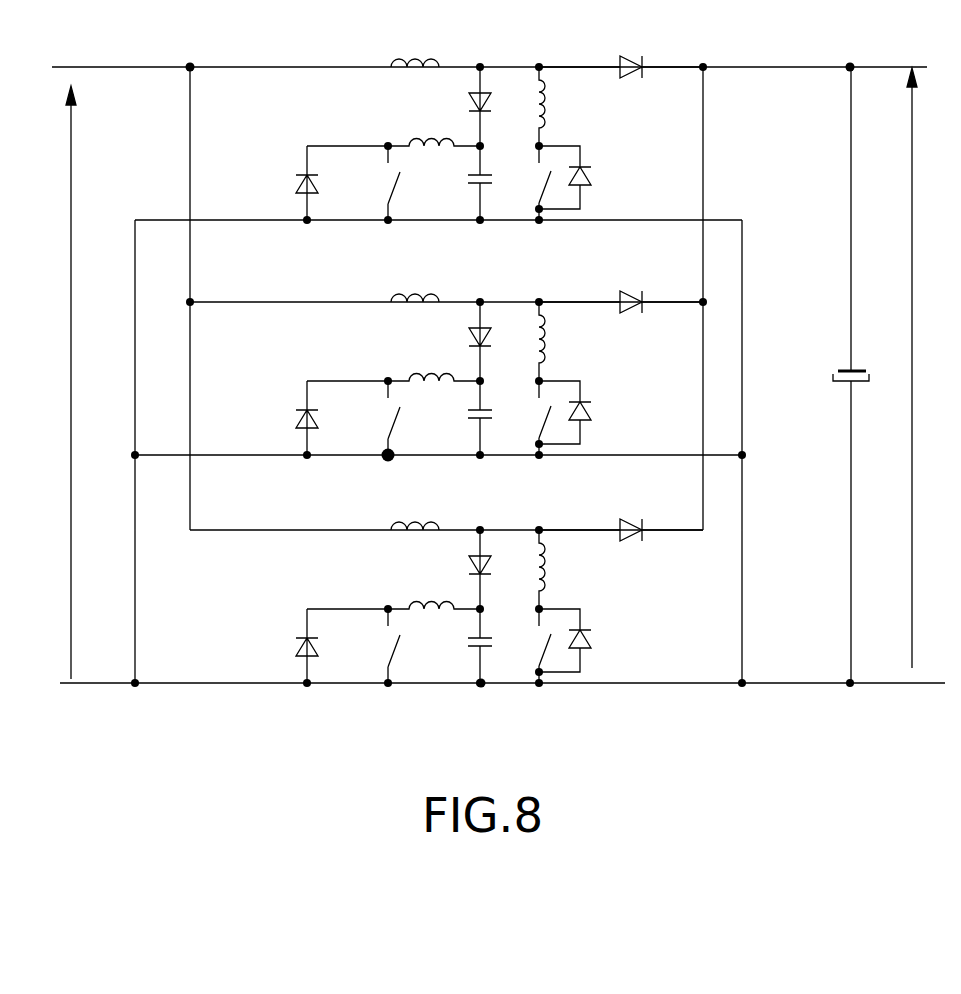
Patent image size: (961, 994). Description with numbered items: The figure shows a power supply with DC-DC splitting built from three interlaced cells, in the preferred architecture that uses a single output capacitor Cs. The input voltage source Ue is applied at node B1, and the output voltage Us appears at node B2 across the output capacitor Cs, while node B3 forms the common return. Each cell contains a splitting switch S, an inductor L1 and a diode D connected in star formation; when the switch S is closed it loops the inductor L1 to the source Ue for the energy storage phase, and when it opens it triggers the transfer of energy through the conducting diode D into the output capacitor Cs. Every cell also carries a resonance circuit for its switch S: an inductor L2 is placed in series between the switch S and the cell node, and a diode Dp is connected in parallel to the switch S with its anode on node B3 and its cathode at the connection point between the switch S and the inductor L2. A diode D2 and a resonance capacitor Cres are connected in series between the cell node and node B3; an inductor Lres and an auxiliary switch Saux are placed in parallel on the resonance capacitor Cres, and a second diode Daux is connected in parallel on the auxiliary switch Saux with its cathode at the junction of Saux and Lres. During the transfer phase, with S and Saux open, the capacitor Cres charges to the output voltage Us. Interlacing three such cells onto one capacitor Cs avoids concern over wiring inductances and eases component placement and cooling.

The node B1 is at (190, 63).
The node B2 is at (850, 63).
The node B3 is at (483, 684).
The inductor L1 is at (415, 274).
The inductor L2 is at (561, 338).
The diode D is at (621, 282).
The diode D2 is at (468, 562).
The diode Dp is at (584, 409).
The inductor Lres is at (421, 591).
The resonance capacitor Cres is at (465, 644).
The second diode Daux is at (265, 414).
The auxiliary switch Saux is at (360, 414).
The splitting switch S is at (529, 414).
The output capacitor Cs is at (828, 375).
The voltage source Ue is at (47, 382).
The output voltage Us is at (929, 368).